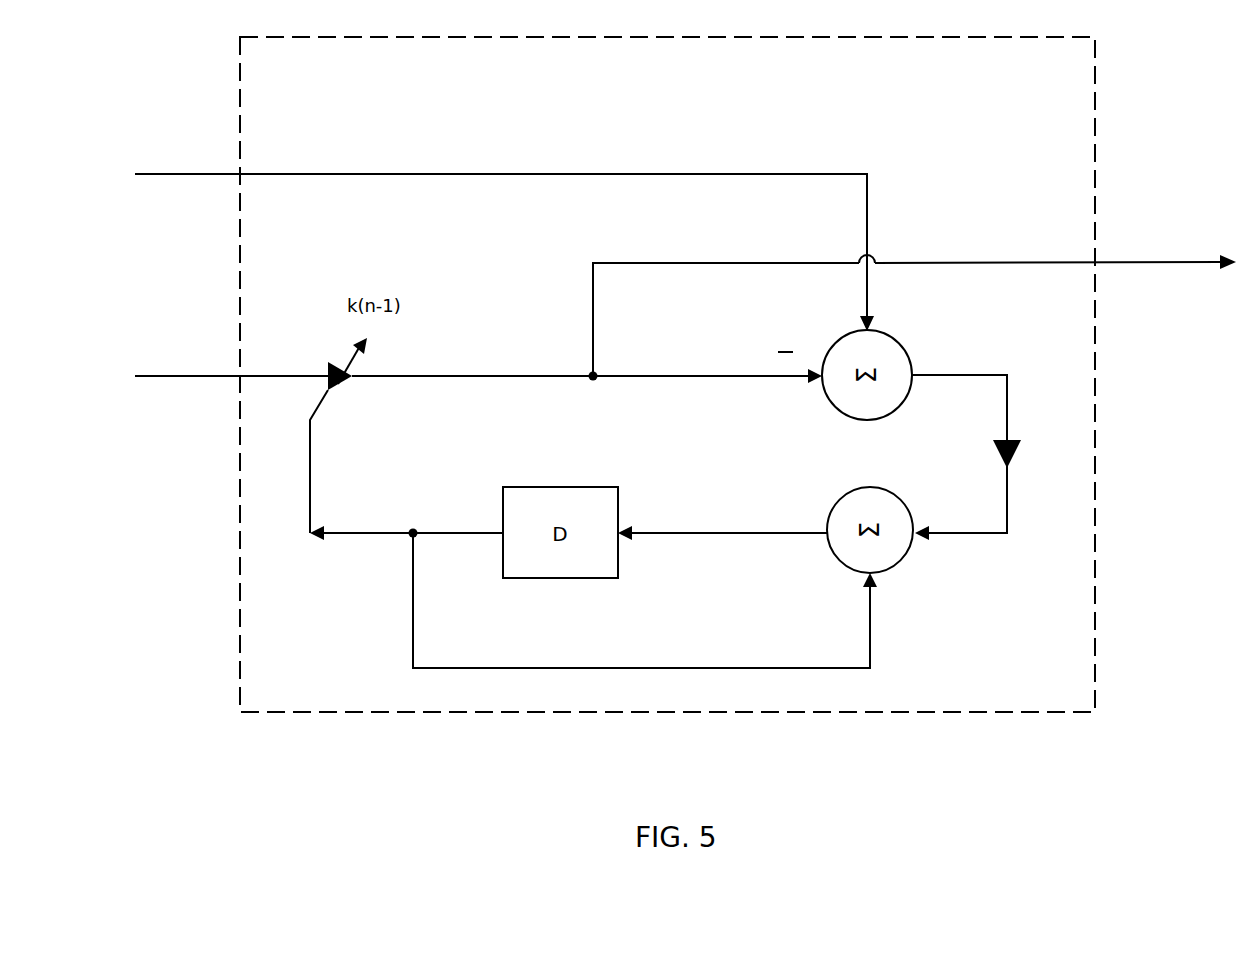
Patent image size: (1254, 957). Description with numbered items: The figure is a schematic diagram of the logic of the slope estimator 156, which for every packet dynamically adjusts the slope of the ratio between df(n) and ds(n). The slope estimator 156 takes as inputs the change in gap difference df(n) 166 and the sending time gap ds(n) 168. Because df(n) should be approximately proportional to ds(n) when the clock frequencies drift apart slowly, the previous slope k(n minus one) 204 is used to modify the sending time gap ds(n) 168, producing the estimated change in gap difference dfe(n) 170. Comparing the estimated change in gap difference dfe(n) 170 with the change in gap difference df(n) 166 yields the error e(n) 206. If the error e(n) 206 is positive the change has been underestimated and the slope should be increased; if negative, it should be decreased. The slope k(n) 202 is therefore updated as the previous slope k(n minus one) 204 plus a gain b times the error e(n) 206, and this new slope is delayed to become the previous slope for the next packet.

The slope estimator 156 is at (1010, 115).
The change in gap difference df(n) 166 is at (320, 174).
The sending time gap ds(n) 168 is at (205, 376).
The estimated change in gap difference dfe(n) 170 is at (435, 376).
The slope k(n) 202 is at (730, 533).
The previous slope k(n-1) 204 is at (360, 533).
The error e(n) 206 is at (1007, 395).